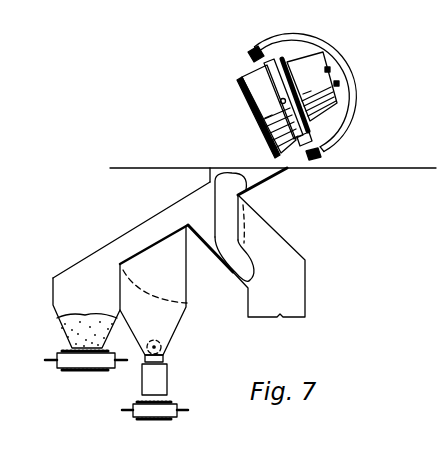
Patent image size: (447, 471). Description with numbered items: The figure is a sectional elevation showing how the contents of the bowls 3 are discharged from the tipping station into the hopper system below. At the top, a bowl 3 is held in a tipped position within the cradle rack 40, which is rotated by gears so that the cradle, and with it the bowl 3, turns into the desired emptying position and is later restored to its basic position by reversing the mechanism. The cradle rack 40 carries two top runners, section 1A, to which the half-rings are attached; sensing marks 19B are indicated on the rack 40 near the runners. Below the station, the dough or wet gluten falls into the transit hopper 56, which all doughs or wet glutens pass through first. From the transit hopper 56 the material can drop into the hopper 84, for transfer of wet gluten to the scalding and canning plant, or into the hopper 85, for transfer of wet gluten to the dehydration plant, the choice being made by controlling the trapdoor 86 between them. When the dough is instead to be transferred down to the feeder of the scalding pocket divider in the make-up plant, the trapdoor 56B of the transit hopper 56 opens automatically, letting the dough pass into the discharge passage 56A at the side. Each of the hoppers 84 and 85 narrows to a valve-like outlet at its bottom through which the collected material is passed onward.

The bowl 3 is at (255, 104).
The cradle rack 40 is at (320, 54).
The top runners 1A is at (254, 48).
The sensor 19B is at (338, 84).
The transit hopper 56 is at (210, 178).
The discharge block 56A is at (272, 243).
The trapdoor 56B is at (208, 254).
The trapdoor 86 is at (154, 257).
The hopper 84 is at (86, 324).
The hopper 85 is at (154, 322).